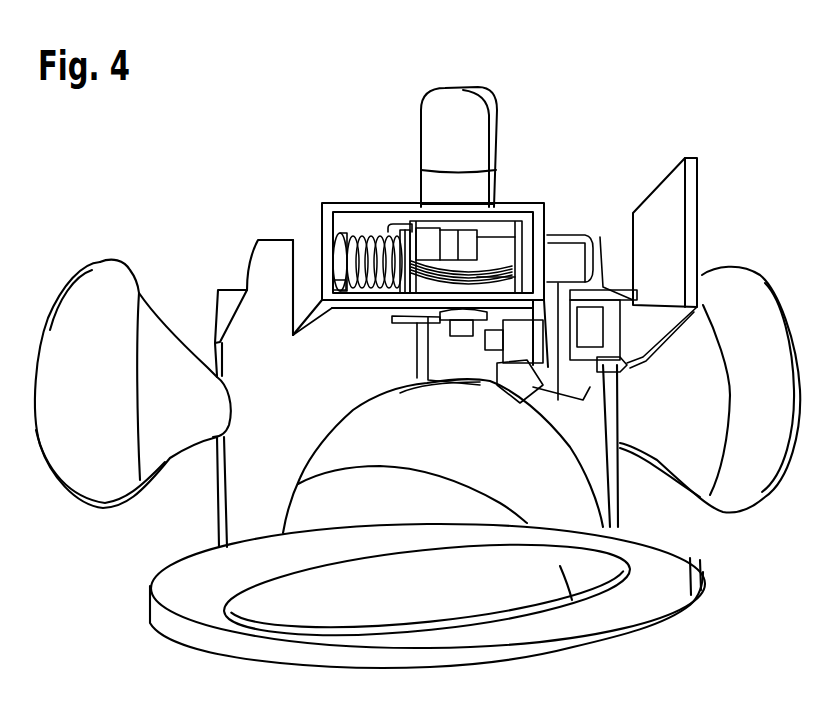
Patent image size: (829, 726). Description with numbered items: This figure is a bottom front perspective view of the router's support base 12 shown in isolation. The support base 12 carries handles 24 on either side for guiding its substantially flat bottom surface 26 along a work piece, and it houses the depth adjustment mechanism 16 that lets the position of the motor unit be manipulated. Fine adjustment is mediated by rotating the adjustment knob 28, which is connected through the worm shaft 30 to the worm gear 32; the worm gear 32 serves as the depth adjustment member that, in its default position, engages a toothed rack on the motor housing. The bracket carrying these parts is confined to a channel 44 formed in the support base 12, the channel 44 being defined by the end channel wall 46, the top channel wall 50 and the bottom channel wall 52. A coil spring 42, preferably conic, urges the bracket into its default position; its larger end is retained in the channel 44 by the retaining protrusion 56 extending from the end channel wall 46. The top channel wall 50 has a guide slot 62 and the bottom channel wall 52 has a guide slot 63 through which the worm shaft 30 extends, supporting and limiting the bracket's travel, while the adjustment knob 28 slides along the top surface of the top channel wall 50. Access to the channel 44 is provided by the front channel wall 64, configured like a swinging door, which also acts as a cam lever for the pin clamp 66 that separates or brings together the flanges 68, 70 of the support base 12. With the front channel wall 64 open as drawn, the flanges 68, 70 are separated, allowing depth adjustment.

The support base 12 is at (238, 155).
The depth adjustment mechanism 16 is at (389, 182).
The handles 24 is at (97, 277).
The bottom surface 26 is at (672, 597).
The adjustment knob 28 is at (476, 113).
The worm shaft 30 is at (499, 250).
The worm gear 32 is at (537, 248).
The coil spring 42 is at (335, 240).
The channel 44 is at (333, 237).
The end channel wall 46 is at (548, 249).
The top channel wall 50 is at (400, 238).
The bottom channel wall 52 is at (360, 302).
The retaining protrusion 56 is at (335, 272).
The guide slot 62 is at (413, 222).
The guide slot 63 is at (407, 320).
The front channel wall 64 is at (657, 208).
The pin clamp 66 is at (620, 370).
The flange 68 is at (503, 387).
The flange 70 is at (550, 372).